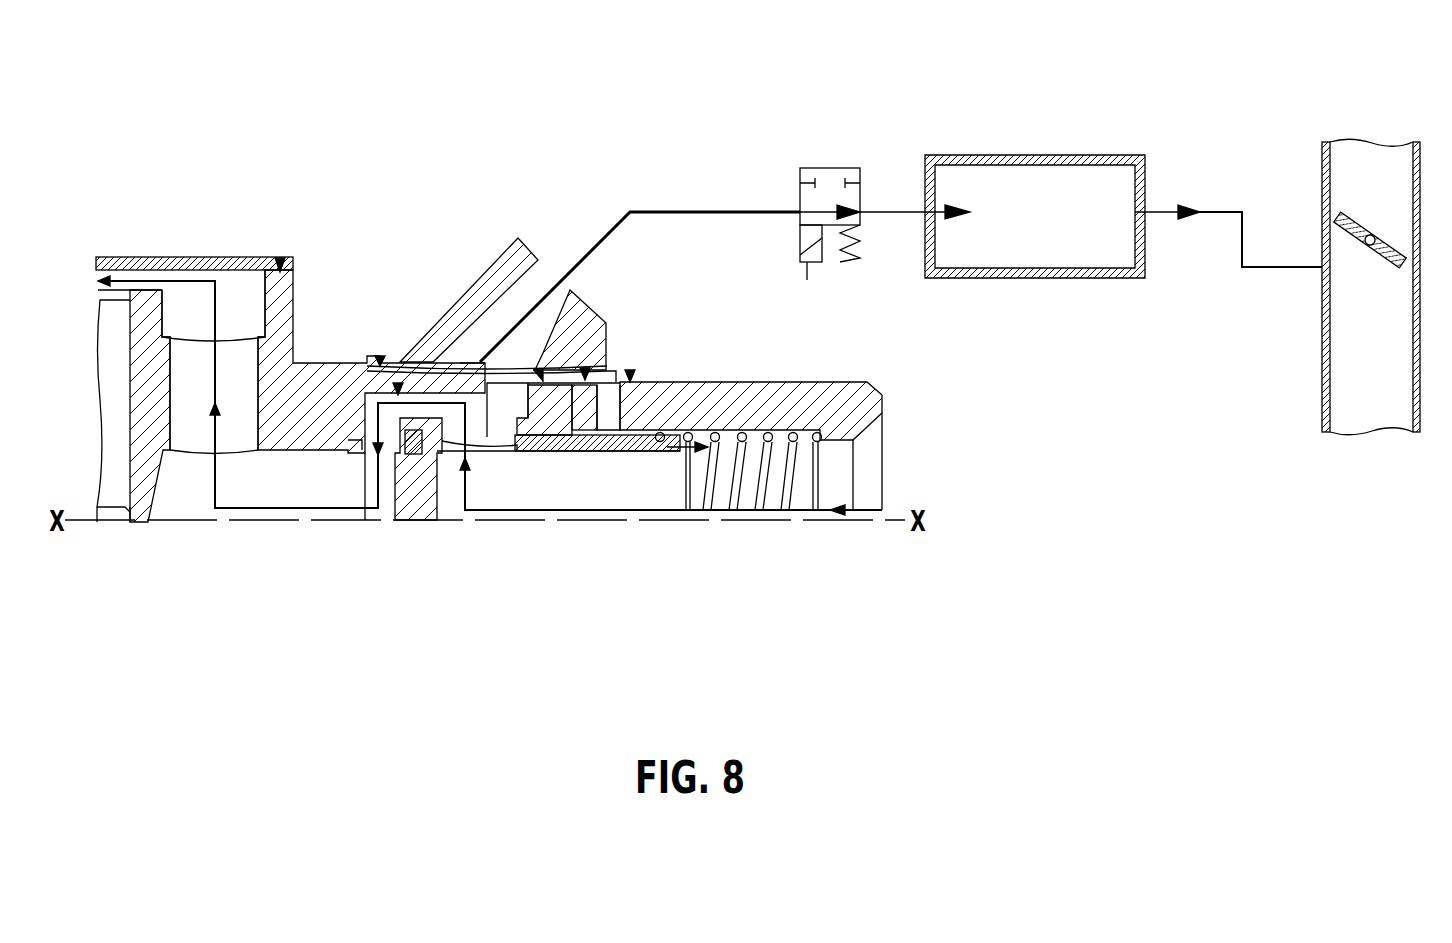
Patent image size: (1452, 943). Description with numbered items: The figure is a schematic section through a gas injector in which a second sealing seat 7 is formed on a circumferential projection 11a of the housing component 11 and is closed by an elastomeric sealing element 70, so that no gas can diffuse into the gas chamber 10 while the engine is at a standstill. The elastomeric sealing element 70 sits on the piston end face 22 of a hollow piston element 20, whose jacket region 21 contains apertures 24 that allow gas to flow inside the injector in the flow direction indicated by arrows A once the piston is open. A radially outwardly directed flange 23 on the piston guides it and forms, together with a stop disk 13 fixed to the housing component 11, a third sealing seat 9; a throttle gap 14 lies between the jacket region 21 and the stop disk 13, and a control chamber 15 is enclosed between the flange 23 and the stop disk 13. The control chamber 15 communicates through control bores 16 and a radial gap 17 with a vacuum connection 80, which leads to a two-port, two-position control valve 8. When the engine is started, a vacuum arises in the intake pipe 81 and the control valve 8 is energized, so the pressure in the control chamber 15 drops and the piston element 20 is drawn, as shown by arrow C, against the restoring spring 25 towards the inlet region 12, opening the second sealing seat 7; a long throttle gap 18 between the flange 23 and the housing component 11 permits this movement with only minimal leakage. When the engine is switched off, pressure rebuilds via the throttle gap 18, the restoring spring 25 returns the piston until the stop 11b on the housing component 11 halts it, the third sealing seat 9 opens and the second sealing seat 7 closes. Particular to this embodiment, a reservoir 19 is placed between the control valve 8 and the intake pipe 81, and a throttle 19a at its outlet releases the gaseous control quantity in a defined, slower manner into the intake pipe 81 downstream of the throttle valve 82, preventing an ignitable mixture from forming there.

The second sealing seat 7 is at (330, 452).
The control valve 8 is at (830, 168).
The third sealing seat 9 is at (557, 395).
The gas chamber 10 is at (190, 292).
The housing component 11 is at (318, 397).
The circumferential projection 11a is at (348, 440).
The stop 11b is at (472, 373).
The inlet region 12 is at (820, 395).
The stop disk 13 is at (655, 352).
The throttle gap 14 is at (588, 427).
The control chamber 15 is at (497, 442).
The control bore 16 is at (595, 360).
The radial gap 17 is at (600, 362).
The throttle gap 18 is at (540, 360).
The reservoir 19 is at (1034, 157).
The throttle 19a is at (1148, 212).
The piston element 20 is at (398, 385).
The jacket region 21 is at (620, 447).
The piston end face 22 is at (423, 440).
The radially outwardly directed flange 23 is at (534, 428).
The aperture 24 is at (465, 447).
The restoring spring 25 is at (740, 432).
The elastomeric sealing element 70 is at (421, 462).
The vacuum connection 80 is at (533, 250).
The intake pipe 81 is at (1322, 178).
The throttle valve 82 is at (1352, 215).
The flow direction arrows A is at (660, 587).
The piston movement arrow C is at (692, 455).